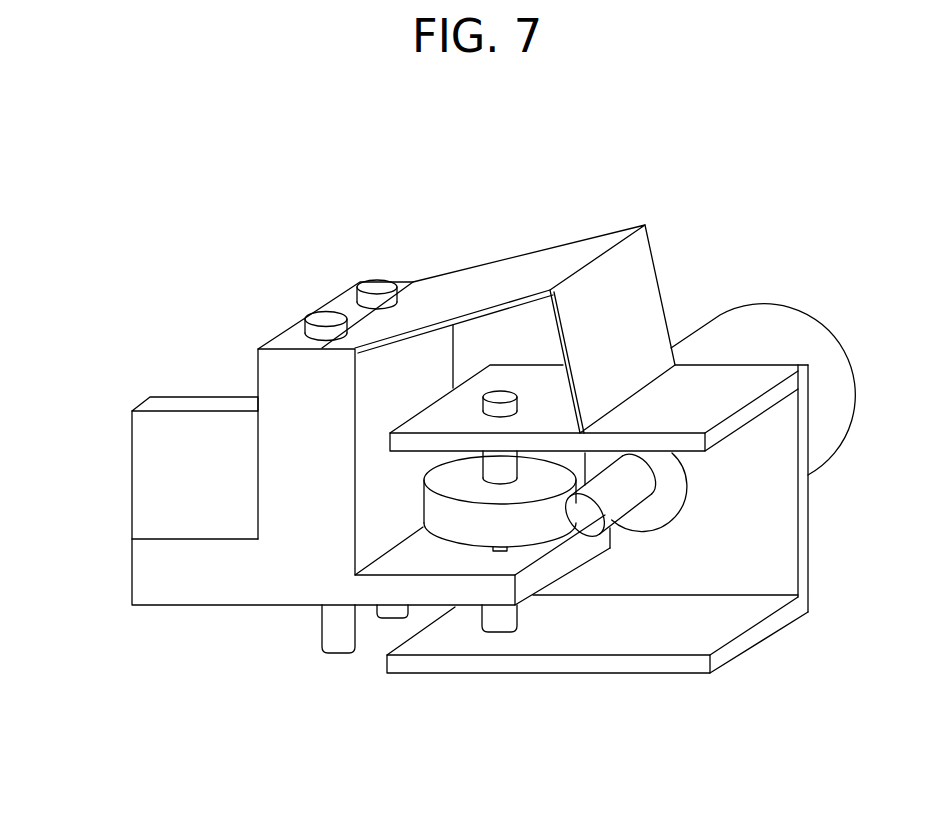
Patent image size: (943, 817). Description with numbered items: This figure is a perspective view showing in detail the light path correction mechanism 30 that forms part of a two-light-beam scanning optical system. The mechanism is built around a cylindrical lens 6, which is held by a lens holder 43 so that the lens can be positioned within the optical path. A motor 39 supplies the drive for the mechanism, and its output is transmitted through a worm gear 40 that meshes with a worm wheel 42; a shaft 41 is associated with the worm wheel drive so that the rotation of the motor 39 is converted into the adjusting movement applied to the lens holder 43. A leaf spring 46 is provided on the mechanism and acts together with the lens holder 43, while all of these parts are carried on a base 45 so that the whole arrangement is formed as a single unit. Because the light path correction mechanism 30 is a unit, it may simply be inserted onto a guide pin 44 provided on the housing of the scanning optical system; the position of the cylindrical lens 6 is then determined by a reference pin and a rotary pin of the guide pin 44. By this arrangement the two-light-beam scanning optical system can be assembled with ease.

The light path correction mechanism 30 is at (204, 274).
The cylindrical lens 6 is at (163, 443).
The motor 39 is at (788, 323).
The worm gear 40 is at (637, 497).
The shaft 41 is at (497, 550).
The worm wheel 42 is at (450, 520).
The lens holder 43 is at (242, 580).
The guide pin 44 is at (338, 637).
The base 45 is at (682, 640).
The leaf spring 46 is at (485, 288).